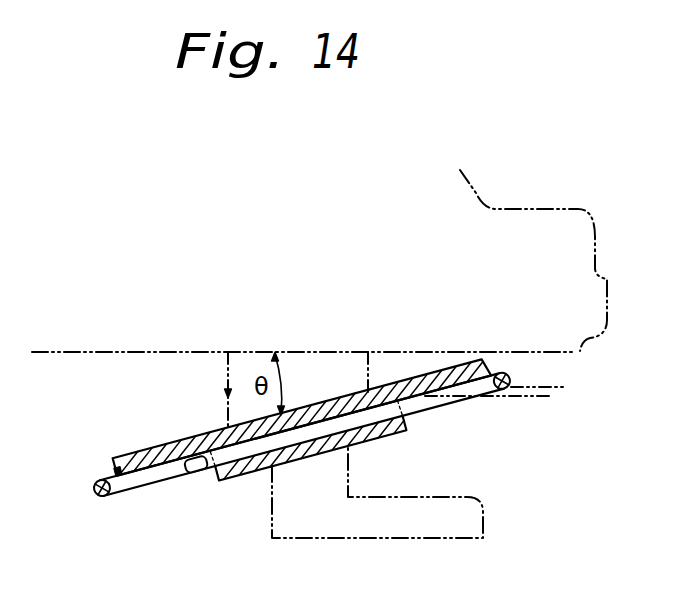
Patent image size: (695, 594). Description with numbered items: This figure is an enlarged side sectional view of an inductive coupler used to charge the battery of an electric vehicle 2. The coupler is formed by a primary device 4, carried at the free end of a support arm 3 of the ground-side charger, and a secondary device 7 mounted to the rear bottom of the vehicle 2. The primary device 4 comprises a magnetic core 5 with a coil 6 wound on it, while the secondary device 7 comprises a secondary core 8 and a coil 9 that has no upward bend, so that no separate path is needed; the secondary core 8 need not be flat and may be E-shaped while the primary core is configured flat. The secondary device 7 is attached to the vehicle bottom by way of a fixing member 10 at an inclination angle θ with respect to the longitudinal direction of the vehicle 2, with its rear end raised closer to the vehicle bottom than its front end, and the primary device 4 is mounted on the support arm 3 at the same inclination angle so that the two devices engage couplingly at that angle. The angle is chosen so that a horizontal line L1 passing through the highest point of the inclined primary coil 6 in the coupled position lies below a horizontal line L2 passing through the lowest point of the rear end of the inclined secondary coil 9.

The electric vehicle 2 is at (553, 207).
The support arm 3 is at (452, 538).
The primary device 4 is at (294, 493).
The core 5 is at (238, 479).
The coil 6 is at (199, 472).
The secondary device 7 is at (136, 449).
The secondary core 8 is at (113, 469).
The coil 9 is at (94, 489).
The fixing member 10 is at (224, 393).
The horizontal line L1 is at (552, 396).
The horizontal line L2 is at (555, 383).